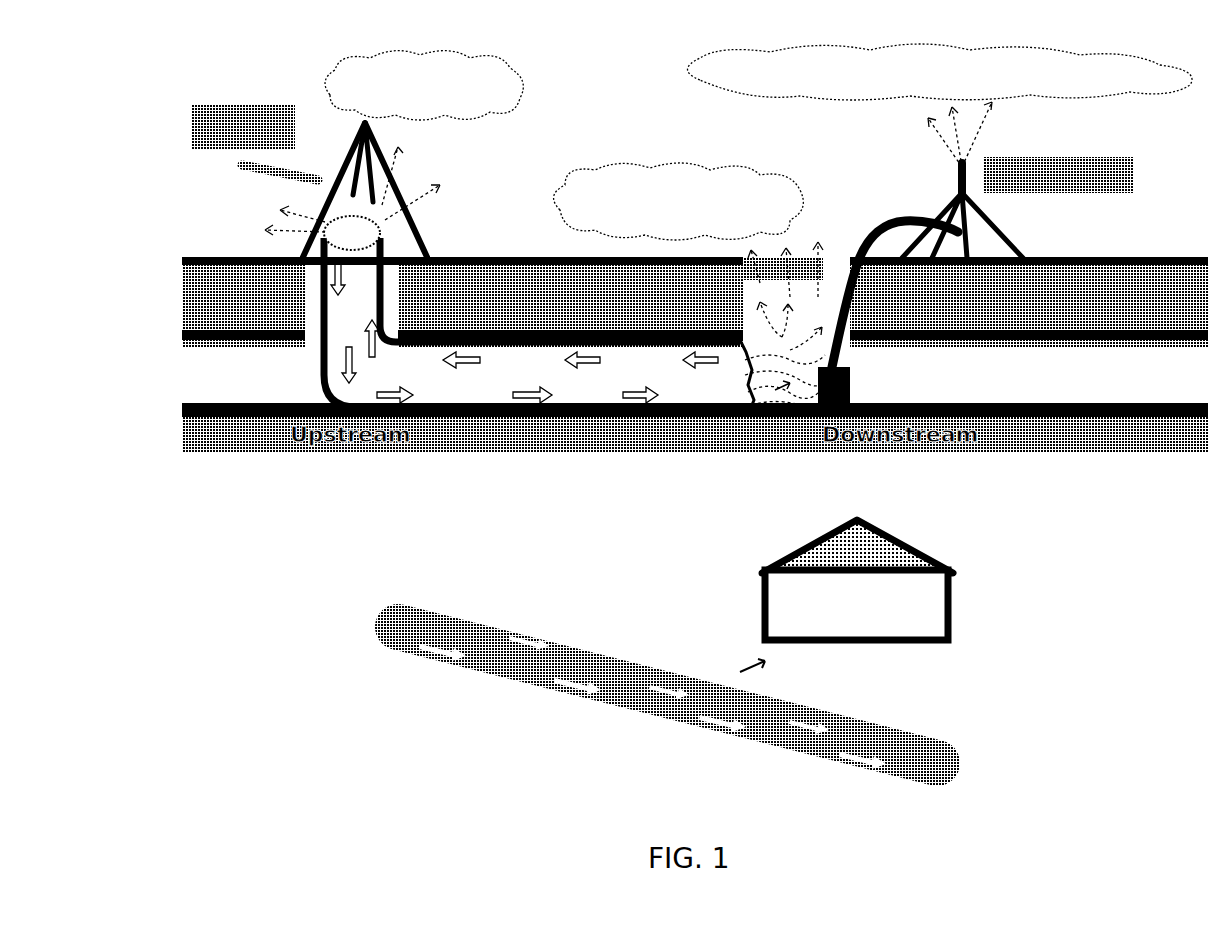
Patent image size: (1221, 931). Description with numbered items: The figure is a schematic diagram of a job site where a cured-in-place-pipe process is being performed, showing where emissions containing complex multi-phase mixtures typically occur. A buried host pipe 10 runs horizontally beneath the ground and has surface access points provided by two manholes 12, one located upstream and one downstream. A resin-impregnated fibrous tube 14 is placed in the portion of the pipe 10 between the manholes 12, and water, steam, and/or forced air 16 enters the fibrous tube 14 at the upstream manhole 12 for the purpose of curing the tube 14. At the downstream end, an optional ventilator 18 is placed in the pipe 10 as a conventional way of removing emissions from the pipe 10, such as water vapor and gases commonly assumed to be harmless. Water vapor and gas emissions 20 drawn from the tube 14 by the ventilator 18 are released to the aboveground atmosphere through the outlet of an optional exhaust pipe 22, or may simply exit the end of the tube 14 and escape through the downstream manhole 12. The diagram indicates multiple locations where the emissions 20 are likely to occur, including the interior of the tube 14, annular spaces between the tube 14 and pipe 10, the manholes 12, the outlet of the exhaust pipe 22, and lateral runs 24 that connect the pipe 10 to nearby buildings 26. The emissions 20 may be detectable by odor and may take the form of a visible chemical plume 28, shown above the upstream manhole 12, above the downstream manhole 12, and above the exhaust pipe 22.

The host pipe 10 is at (220, 390).
The manholes 12 is at (317, 297).
The resin-impregnated fibrous tube 14 is at (683, 408).
The water, steam, and/or forced air 16 is at (273, 167).
The ventilator 18 is at (850, 377).
The water vapor and gas emissions 20 is at (787, 462).
The exhaust pipe 22 is at (965, 172).
The lateral runs 24 is at (700, 627).
The nearby buildings 26 is at (942, 567).
The chemical plume 28 is at (498, 93).